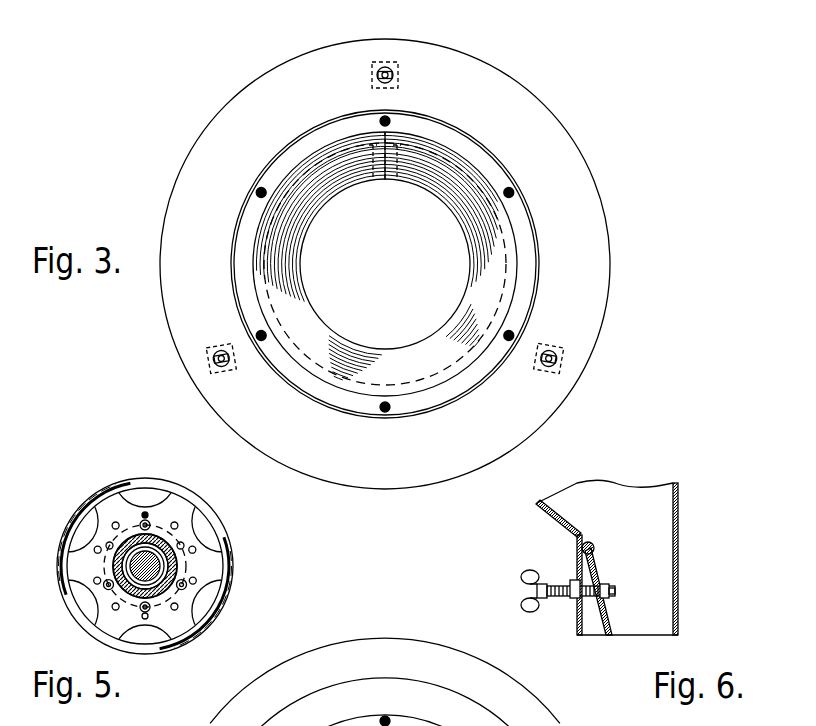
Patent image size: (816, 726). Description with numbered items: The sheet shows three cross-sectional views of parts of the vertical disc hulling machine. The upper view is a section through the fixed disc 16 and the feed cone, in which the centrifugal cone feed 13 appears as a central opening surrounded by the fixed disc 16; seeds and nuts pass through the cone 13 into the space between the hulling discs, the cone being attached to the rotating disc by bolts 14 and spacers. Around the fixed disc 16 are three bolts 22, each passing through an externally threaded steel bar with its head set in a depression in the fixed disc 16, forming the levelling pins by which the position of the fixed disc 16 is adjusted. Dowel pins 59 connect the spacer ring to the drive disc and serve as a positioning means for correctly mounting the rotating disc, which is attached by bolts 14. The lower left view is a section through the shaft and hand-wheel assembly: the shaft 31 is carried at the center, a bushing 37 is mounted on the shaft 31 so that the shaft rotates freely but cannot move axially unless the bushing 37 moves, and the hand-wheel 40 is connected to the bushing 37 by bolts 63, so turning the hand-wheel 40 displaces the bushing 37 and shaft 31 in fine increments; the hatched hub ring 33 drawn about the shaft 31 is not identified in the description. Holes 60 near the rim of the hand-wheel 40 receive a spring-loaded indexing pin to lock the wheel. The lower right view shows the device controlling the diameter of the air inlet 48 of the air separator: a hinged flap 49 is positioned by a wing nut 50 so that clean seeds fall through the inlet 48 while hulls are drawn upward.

In FIG. 3, the centrifugal cone feed 13 is at (460, 203).
In FIG. 3, the bolts 14 is at (258, 191).
In FIG. 4, the bolts 14 is at (390, 717).
In FIG. 3, the fixed disc 16 is at (580, 172).
In FIG. 3, the bolt 22 is at (386, 62).
In FIG. 5, the shaft 31 is at (97, 565).
In FIG. 5, the hub ring 33 is at (133, 538).
In FIG. 5, the bushing 37 is at (176, 565).
In FIG. 5, the hand-wheel 40 is at (190, 488).
In FIG. 6, the air inlet 48 is at (636, 637).
In FIG. 6, the hinged flap 49 is at (594, 571).
In FIG. 6, the wing nut 50 is at (535, 570).
In FIG. 4, the dowel pins 59 is at (332, 725).
In FIG. 5, the holes 60 is at (112, 607).
In FIG. 5, the bolts 63 is at (178, 606).